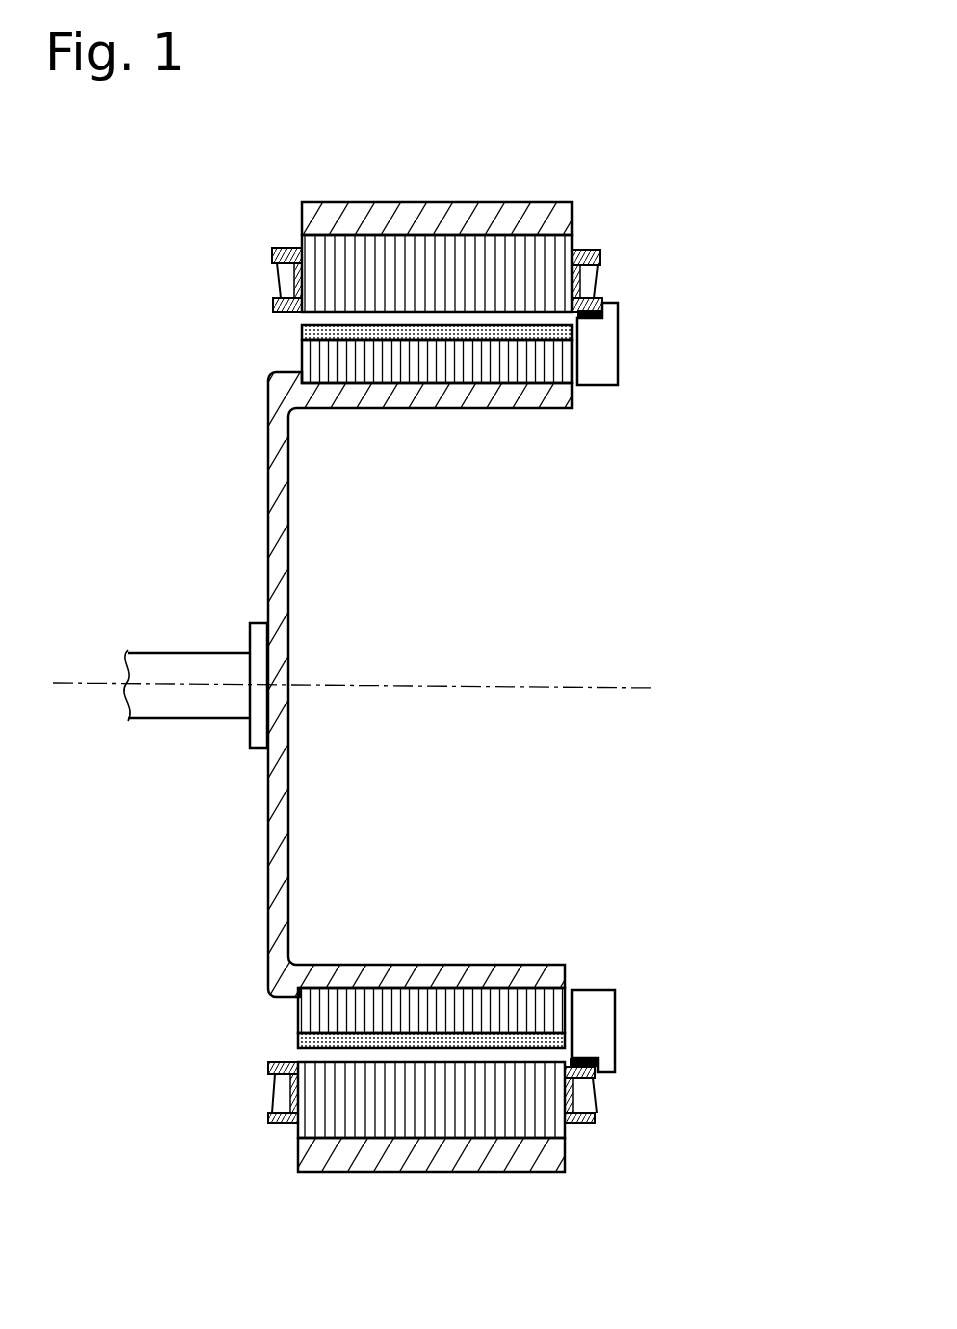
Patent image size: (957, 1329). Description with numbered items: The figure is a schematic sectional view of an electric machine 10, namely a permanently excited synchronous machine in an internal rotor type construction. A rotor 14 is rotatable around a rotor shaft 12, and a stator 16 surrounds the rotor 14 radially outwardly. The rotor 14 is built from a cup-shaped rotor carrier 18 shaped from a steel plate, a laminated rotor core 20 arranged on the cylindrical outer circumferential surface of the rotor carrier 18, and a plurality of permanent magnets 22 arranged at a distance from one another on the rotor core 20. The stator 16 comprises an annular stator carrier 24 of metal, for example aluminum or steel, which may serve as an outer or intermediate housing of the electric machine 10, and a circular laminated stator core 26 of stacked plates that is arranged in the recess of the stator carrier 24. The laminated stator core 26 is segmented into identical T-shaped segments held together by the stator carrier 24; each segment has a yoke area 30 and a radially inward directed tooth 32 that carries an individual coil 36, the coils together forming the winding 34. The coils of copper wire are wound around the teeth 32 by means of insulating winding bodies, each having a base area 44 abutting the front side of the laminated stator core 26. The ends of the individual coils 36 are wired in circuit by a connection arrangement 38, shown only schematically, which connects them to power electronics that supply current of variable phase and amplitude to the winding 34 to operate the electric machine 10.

The electric machine 10 is at (210, 1037).
The rotor shaft 12 is at (165, 653).
The rotor 14 is at (233, 490).
The stator 16 is at (620, 177).
The rotor carrier 18 is at (265, 915).
The laminated rotor core 20 is at (300, 355).
The permanent magnets 22 is at (300, 332).
The stator carrier 24 is at (522, 202).
The laminated stator core 26 is at (300, 245).
The yoke area 30 is at (575, 244).
The tooth 32 is at (502, 312).
The winding 34 is at (699, 1090).
The individual coil 36 is at (580, 1098).
The connection arrangement 38 is at (605, 345).
The base area 44 is at (600, 282).